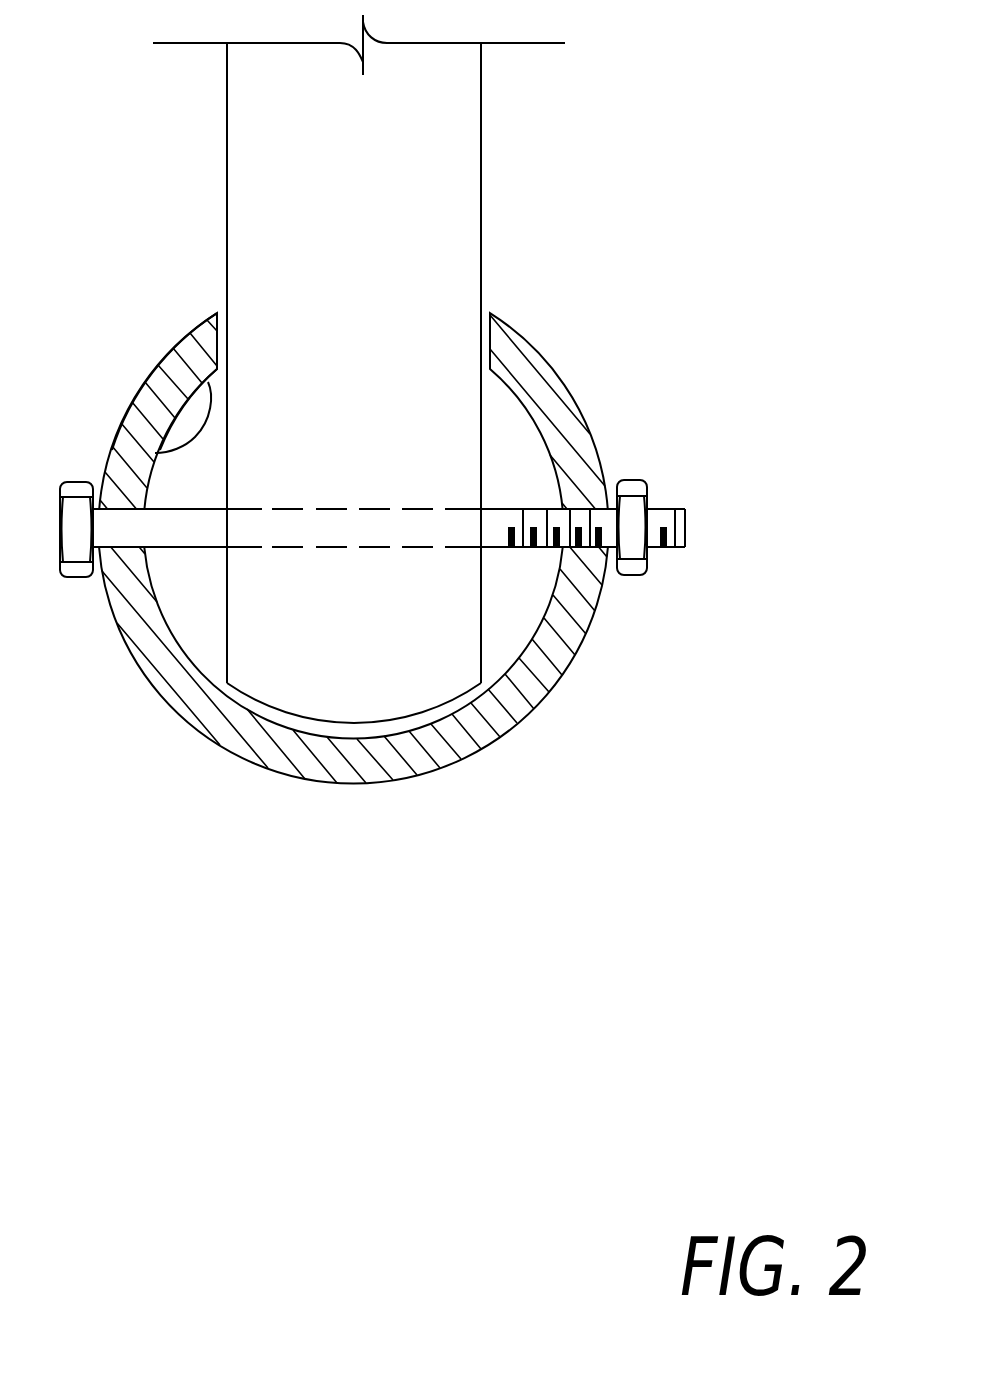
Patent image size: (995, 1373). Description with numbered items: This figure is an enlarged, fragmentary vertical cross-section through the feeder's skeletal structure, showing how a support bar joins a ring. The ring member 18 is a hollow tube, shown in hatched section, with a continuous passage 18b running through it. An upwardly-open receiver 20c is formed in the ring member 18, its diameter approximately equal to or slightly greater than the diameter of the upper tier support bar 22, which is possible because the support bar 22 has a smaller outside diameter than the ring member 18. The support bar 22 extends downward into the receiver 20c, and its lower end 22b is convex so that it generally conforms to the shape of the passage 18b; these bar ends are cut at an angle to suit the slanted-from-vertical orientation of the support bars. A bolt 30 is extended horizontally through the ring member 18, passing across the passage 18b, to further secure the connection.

The ring member 18 is at (572, 390).
The continuous passage 18b is at (227, 344).
The upwardly-open receiver 20c is at (227, 345).
The upper tier support bar 22 is at (340, 447).
The lower end of upper tier support bar 22b is at (350, 723).
The bolt 30 is at (63, 577).